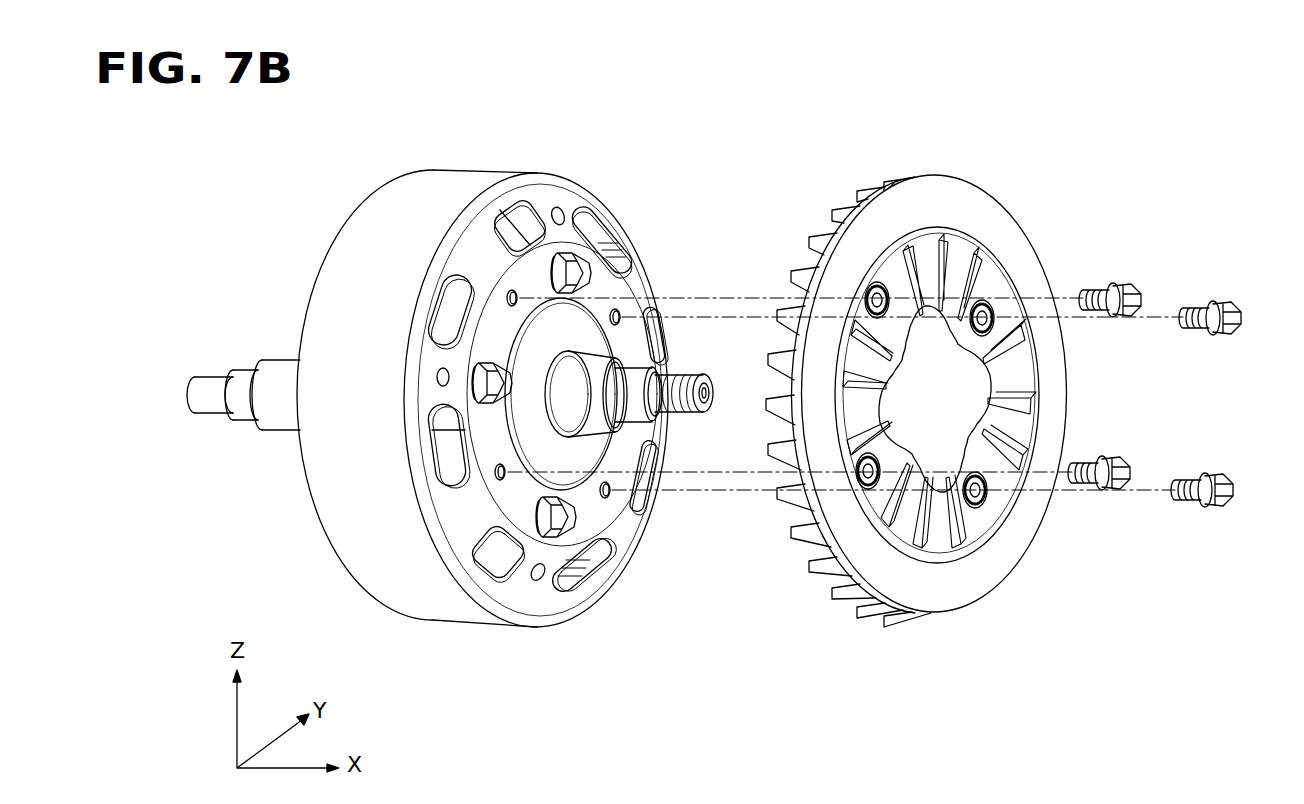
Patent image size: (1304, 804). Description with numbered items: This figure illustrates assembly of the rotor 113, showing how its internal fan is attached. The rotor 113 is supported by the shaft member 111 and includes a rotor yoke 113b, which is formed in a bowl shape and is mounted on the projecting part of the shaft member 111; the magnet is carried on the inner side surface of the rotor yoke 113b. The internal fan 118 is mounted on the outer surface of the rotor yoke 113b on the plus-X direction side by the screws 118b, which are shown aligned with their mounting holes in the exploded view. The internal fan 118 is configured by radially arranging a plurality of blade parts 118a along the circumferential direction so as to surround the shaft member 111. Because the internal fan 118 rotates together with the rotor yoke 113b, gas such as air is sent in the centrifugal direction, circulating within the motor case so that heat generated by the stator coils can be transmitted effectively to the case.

The shaft member 111 is at (284, 422).
The rotor 113 is at (507, 410).
The rotor yoke 113b is at (443, 605).
The internal fan 118 is at (916, 429).
The blade parts 118a is at (862, 588).
The screws 118b is at (1227, 481).